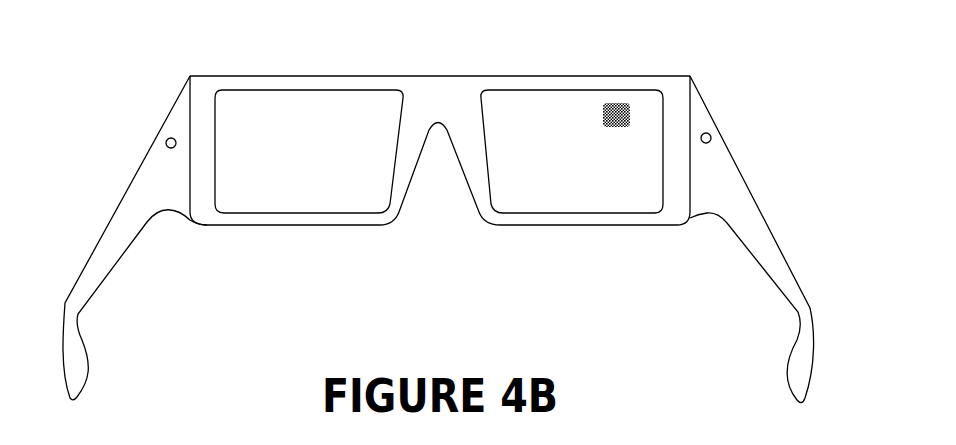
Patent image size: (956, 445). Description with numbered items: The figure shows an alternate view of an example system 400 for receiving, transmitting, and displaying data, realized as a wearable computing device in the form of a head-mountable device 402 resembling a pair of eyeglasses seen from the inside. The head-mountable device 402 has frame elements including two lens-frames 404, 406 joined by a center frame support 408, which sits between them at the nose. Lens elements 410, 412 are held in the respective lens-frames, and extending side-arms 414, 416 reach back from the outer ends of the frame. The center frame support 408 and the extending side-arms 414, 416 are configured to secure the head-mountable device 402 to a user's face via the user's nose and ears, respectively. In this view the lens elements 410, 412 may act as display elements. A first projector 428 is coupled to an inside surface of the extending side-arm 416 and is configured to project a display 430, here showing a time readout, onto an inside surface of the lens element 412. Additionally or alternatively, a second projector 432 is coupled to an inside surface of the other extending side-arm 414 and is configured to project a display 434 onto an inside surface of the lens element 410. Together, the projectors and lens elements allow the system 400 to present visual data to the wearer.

The system 400 is at (438, 208).
The head-mountable device 402 is at (440, 151).
The lens-frame 404 is at (652, 225).
The lens-frame 406 is at (235, 225).
The center frame support 408 is at (440, 76).
The lens element 410 is at (540, 205).
The lens element 412 is at (323, 205).
The extending side-arm 414 is at (742, 175).
The extending side-arm 416 is at (117, 207).
The first projector 428 is at (166, 143).
The display 430 is at (300, 121).
The second projector 432 is at (708, 133).
The display 434 is at (605, 115).